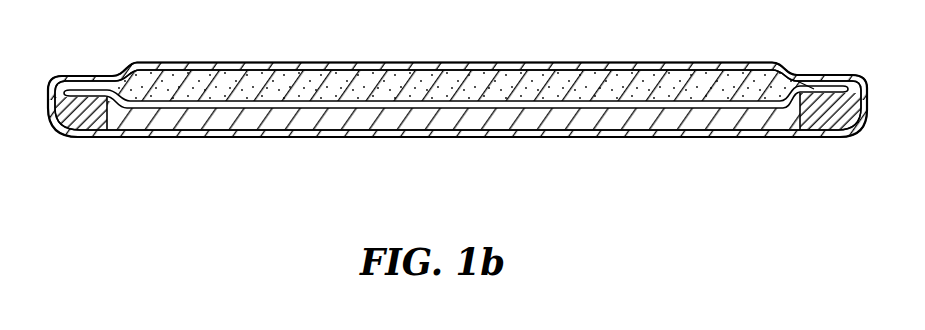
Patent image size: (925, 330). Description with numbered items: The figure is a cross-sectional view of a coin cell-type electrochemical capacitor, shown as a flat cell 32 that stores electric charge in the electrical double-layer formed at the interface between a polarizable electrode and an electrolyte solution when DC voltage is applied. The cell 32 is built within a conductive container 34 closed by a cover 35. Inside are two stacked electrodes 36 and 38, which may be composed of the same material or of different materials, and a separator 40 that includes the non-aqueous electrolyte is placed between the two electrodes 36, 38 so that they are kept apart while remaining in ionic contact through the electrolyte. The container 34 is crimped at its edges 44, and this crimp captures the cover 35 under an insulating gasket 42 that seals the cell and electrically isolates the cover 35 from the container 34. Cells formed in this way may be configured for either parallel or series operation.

The cell 32 is at (137, 167).
The conductive container 34 is at (743, 137).
The cover 35 is at (631, 63).
The electrode 36 is at (500, 119).
The electrode 38 is at (418, 82).
The separator 40 is at (650, 103).
The insulating gasket 42 is at (852, 137).
The edges 44 is at (47, 75).